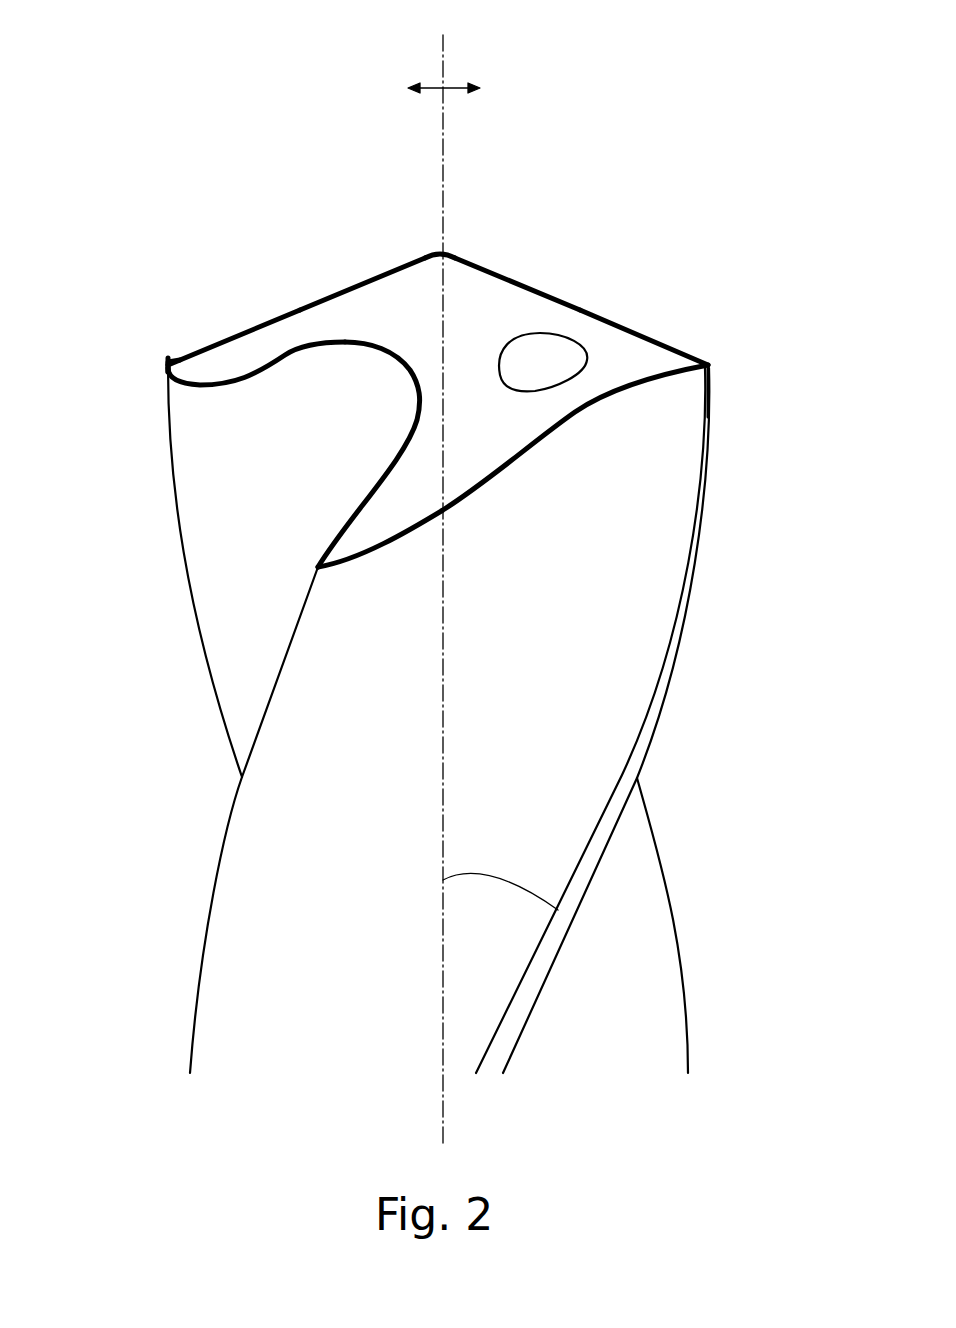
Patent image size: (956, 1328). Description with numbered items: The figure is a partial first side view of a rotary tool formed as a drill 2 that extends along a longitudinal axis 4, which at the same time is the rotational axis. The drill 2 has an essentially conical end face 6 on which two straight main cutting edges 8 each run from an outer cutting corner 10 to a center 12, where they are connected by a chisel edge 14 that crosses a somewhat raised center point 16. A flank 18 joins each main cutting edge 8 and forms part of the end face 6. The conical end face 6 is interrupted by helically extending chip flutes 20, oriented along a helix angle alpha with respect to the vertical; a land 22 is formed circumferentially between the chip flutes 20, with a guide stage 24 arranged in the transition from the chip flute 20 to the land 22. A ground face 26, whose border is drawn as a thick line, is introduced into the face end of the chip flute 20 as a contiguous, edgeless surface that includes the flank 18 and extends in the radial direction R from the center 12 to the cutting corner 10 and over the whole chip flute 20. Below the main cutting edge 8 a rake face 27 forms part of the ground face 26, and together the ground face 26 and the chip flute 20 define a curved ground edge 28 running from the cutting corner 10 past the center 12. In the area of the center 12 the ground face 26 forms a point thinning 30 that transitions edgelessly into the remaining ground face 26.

The drill 2 is at (665, 196).
The longitudinal axis 4 is at (443, 106).
The end face 6 is at (611, 347).
The main cutting edge 8 is at (245, 328).
The cutting corner 10 is at (165, 370).
The center 12 is at (451, 248).
The chisel edge 14 is at (420, 250).
The center point 16 is at (476, 266).
The flank 18 is at (600, 376).
The chip flute 20 is at (200, 528).
The land 22 is at (240, 872).
The guide stage 24 is at (650, 708).
The ground face 26 is at (492, 322).
The rake face 27 is at (193, 362).
The ground edge 28 is at (253, 375).
The point thinning 30 is at (362, 320).
The radial direction R is at (453, 88).
The helix angle alpha is at (507, 876).